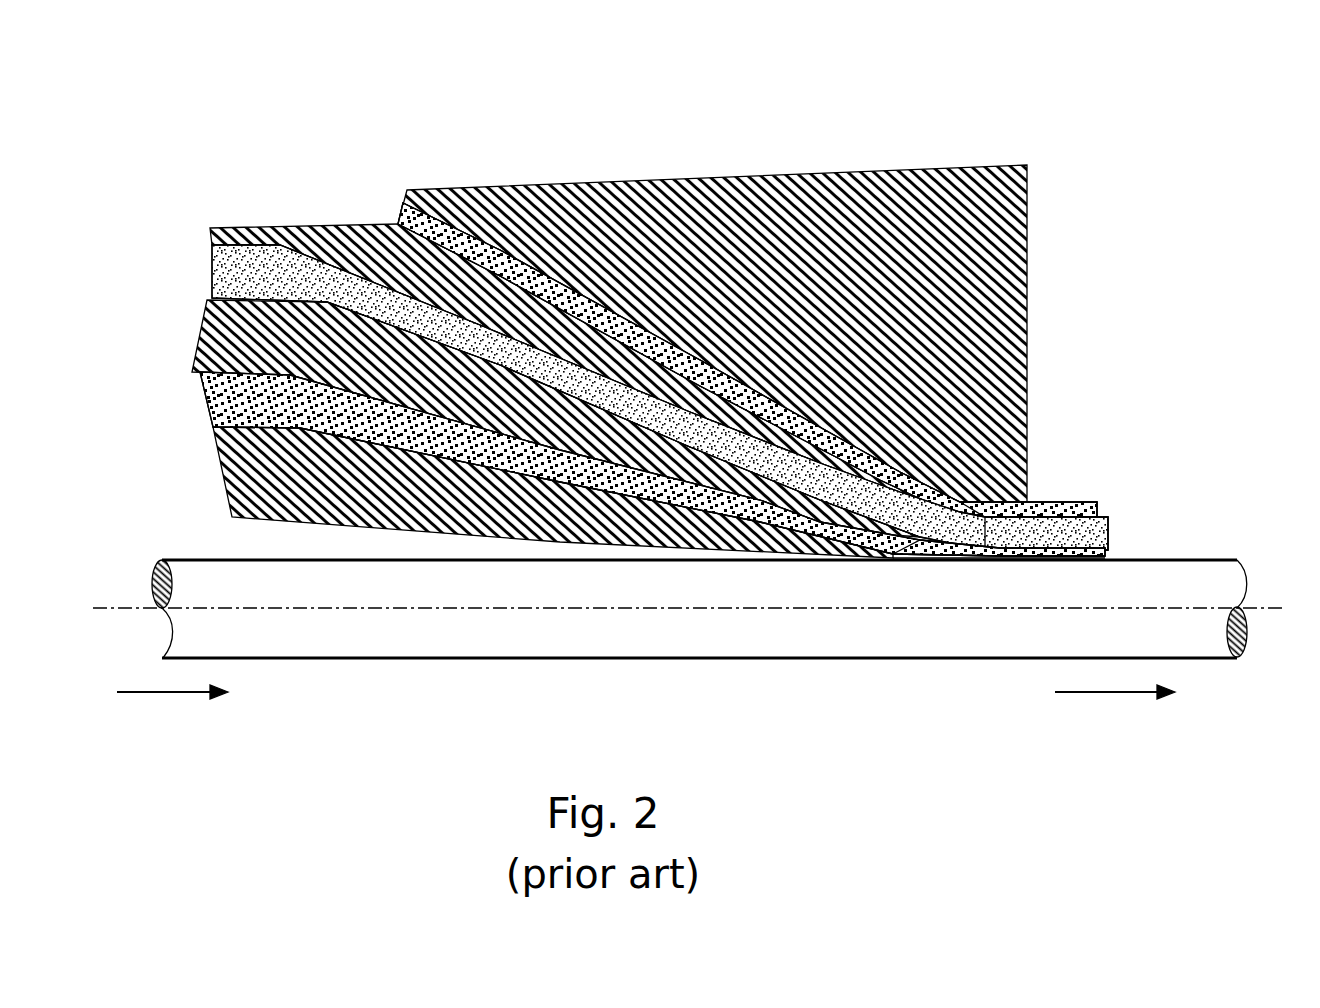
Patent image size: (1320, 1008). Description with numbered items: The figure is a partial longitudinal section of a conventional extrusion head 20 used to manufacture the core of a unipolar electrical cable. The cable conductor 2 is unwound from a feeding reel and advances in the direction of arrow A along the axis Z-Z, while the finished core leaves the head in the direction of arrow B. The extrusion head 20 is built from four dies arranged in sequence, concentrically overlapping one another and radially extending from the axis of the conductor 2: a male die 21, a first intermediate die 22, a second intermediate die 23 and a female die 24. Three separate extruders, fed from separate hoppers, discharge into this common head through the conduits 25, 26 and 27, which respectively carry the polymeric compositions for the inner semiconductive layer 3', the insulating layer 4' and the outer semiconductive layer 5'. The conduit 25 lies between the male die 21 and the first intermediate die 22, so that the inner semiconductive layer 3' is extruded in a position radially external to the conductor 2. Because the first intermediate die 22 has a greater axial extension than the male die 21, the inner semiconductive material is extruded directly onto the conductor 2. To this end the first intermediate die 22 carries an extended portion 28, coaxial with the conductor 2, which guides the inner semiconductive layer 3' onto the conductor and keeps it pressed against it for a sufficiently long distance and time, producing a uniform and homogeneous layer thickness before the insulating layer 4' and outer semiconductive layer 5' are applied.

The cable conductor 2 is at (402, 632).
The extrusion head 20 is at (653, 297).
The male die 21 is at (295, 478).
The first intermediate die 22 is at (230, 330).
The second intermediate die 23 is at (398, 243).
The female die 24 is at (815, 245).
The conduit 25 is at (235, 410).
The conduit 26 is at (278, 272).
The conduit 27 is at (500, 240).
The extended portion 28 is at (917, 547).
The inner semiconductive layer 3' is at (1053, 509).
The insulating layer 4' is at (1079, 479).
The outer semiconductive layer 5' is at (1033, 441).